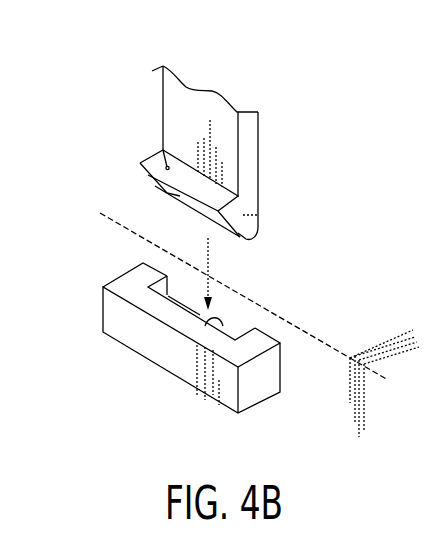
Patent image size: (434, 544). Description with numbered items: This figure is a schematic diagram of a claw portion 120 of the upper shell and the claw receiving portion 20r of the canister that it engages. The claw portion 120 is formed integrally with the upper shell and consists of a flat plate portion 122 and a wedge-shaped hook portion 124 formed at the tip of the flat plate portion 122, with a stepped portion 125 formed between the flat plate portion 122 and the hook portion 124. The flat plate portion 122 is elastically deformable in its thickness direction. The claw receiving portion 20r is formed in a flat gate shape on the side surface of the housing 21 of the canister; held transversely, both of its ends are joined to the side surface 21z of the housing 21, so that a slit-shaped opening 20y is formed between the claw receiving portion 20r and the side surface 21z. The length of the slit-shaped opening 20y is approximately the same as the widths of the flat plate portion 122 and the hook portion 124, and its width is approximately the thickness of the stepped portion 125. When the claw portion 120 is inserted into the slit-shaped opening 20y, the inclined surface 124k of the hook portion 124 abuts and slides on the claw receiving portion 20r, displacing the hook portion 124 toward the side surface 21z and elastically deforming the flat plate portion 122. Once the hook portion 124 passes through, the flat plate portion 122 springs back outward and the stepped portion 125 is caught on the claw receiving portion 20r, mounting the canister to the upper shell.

The claw portion 120 is at (266, 131).
The flat plate portion 122 is at (169, 113).
The hook portion 124 is at (258, 213).
The inclined surface 124k is at (155, 188).
The stepped portion 125 is at (160, 151).
The claw receiving portion 20r is at (158, 338).
The slit-shaped opening 20y is at (200, 347).
The housing 21 is at (306, 356).
The side surface 21z is at (325, 370).